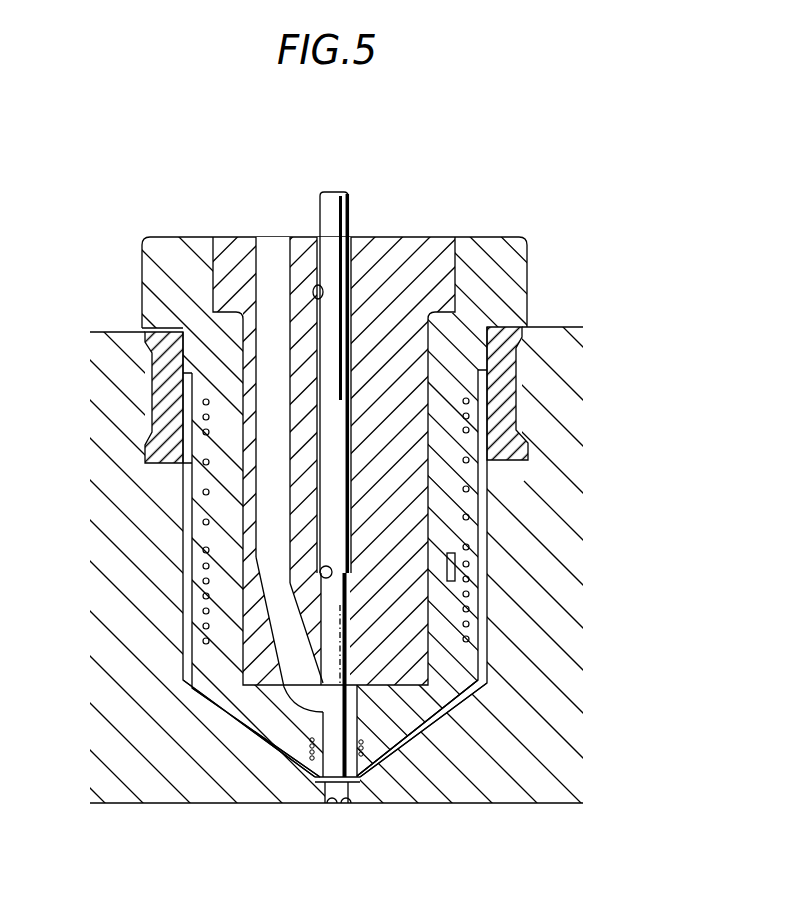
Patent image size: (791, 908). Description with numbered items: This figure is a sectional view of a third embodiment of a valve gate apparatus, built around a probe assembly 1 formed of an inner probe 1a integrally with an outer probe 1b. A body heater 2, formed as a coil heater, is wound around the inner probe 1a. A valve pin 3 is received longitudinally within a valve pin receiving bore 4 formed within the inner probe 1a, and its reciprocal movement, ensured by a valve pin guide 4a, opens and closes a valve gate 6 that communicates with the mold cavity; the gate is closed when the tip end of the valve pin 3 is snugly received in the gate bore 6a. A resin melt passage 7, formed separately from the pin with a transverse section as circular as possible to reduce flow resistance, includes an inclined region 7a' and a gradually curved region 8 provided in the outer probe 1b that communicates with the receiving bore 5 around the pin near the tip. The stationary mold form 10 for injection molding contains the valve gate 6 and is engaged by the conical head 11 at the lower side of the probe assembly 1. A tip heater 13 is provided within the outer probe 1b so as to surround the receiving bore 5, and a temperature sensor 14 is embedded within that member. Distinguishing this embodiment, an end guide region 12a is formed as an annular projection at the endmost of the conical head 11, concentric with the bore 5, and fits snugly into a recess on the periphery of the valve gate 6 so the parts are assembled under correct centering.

The probe assembly 1 is at (378, 462).
The inner probe 1a is at (432, 271).
The outer probe 1b is at (593, 235).
The body heater 2 is at (467, 520).
The valve pin 3 is at (346, 219).
The valve pin receiving bore 4 is at (320, 300).
The valve pin guide 4a is at (322, 565).
The receiving bore 5 is at (315, 777).
The valve gate 6 is at (352, 797).
The gate bore 6a is at (334, 800).
The resin melt passage 7 is at (263, 330).
The inclined region 7a' is at (444, 634).
The gradually curved region 8 is at (322, 735).
The stationary mold form 10 is at (535, 782).
The conical head 11 is at (463, 703).
The end guide region 12a is at (332, 735).
The tip heater 13 is at (377, 763).
The temperature sensor 14 is at (455, 570).